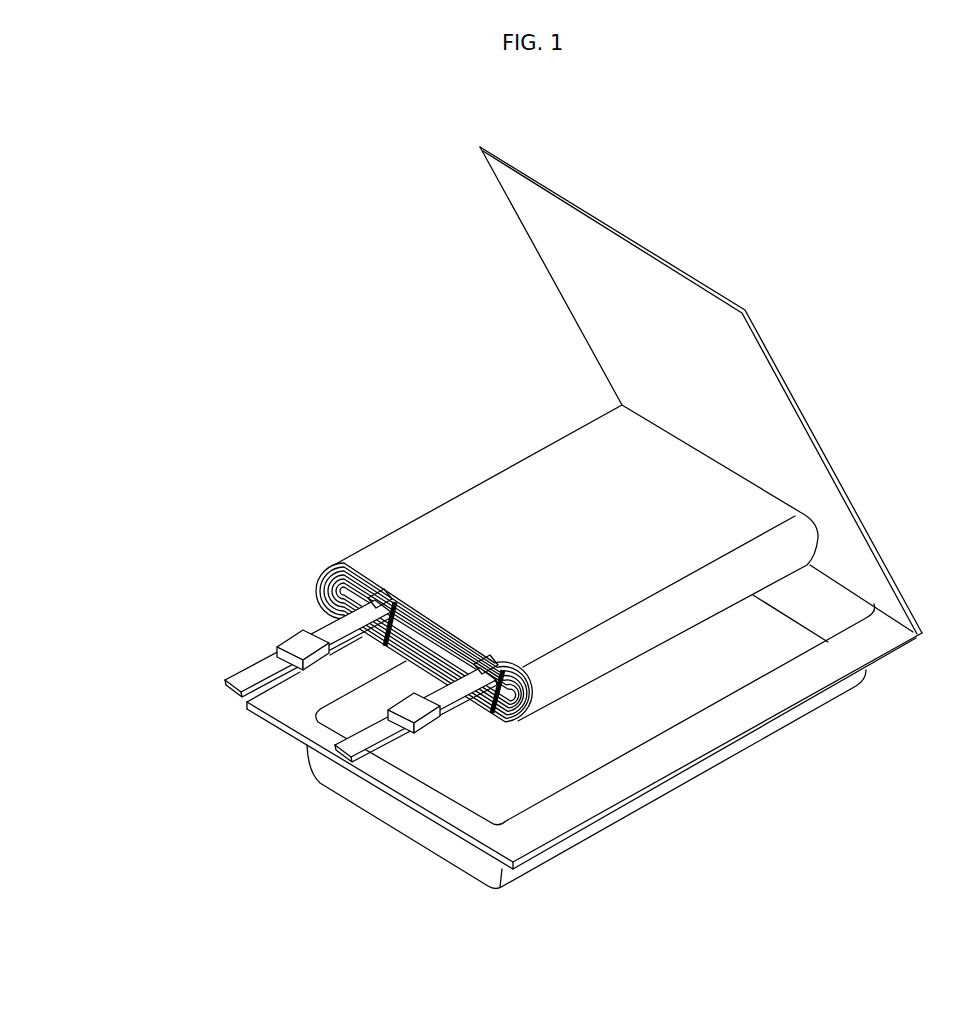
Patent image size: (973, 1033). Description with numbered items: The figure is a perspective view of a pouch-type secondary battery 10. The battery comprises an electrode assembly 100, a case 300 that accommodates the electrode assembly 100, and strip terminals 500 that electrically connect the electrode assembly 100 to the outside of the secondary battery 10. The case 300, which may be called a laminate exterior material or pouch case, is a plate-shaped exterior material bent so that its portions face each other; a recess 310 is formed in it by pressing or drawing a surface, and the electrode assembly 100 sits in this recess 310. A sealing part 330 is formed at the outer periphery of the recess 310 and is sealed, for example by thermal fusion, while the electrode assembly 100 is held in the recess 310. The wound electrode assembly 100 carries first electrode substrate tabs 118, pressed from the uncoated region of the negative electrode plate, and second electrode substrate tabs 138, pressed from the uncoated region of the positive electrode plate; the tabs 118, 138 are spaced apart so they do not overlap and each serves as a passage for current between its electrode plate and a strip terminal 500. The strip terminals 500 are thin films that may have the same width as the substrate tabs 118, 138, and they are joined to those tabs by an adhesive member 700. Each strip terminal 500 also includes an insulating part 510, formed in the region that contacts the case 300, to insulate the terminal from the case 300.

The secondary battery 10 is at (172, 166).
The electrode assembly 100 is at (567, 666).
The first electrode substrate tab 118 is at (542, 708).
The second electrode substrate tab 138 is at (388, 597).
The case 300 is at (584, 518).
The recess 310 is at (618, 728).
The sealing part 330 is at (732, 718).
The strip terminal 500 is at (240, 667).
The insulating part 510 is at (293, 642).
The adhesive member 700 is at (390, 602).